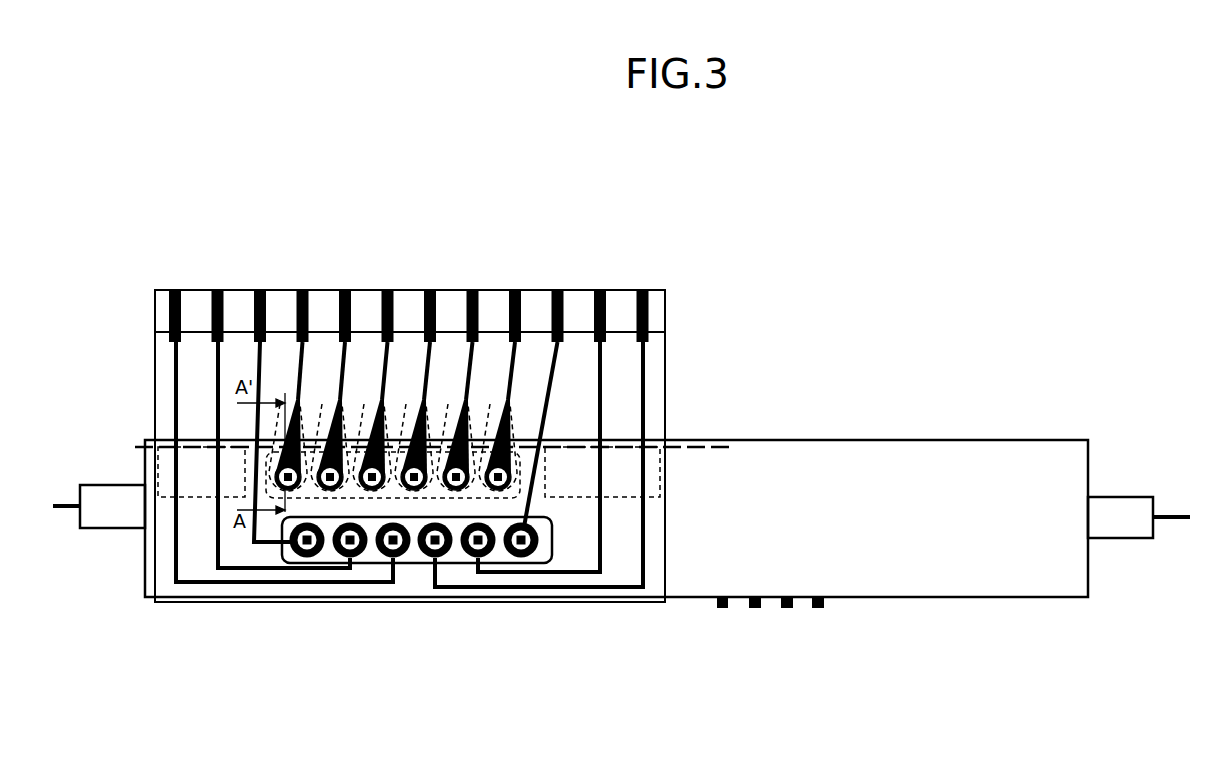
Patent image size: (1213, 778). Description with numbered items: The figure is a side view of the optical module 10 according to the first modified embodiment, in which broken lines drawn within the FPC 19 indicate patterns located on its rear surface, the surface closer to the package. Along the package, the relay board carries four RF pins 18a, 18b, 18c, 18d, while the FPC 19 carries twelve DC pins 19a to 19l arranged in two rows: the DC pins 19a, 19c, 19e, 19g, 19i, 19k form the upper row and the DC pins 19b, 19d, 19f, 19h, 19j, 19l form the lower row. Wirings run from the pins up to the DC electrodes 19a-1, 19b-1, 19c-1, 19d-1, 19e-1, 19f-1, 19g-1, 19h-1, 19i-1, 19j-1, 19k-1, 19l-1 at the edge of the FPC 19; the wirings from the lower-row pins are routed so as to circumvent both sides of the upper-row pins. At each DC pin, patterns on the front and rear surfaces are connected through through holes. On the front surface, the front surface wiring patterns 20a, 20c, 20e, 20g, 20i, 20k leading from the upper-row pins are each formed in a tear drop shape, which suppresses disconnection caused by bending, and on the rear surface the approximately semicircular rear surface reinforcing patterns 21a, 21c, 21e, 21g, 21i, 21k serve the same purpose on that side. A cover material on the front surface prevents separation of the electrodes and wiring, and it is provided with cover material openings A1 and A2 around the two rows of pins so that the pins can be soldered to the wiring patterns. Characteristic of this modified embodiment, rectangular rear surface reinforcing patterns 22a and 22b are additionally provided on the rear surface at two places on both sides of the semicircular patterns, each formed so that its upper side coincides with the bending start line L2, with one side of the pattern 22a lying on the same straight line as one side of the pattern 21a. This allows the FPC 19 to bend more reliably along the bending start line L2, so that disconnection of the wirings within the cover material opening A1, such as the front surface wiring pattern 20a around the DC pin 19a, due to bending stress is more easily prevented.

The optical module 10 is at (1032, 597).
The RF pin 18a is at (723, 608).
The RF pin 18b is at (757, 608).
The RF pin 18c is at (788, 608).
The RF pin 18d is at (820, 608).
The FPC 19 is at (665, 305).
The DC pin 19a is at (290, 495).
The DC pin 19b is at (307, 560).
The DC pin 19c is at (329, 497).
The DC pin 19d is at (350, 560).
The DC pin 19e is at (372, 497).
The DC pin 19f is at (393, 560).
The DC pin 19g is at (414, 497).
The DC pin 19h is at (436, 560).
The DC pin 19i is at (457, 497).
The DC pin 19j is at (478, 560).
The DC pin 19k is at (500, 497).
The DC pin 19l is at (521, 560).
The DC electrode 19a-1 is at (317, 297).
The DC electrode 19b-1 is at (274, 297).
The DC electrode 19c-1 is at (359, 297).
The DC electrode 19d-1 is at (232, 297).
The DC electrode 19e-1 is at (402, 297).
The DC electrode 19f-1 is at (189, 297).
The DC electrode 19g-1 is at (445, 297).
The DC electrode 19h-1 is at (657, 297).
The DC electrode 19i-1 is at (487, 297).
The DC electrode 19j-1 is at (615, 297).
The DC electrode 19k-1 is at (530, 297).
The DC electrode 19l-1 is at (571, 297).
The front surface wiring pattern 20a is at (272, 462).
The front surface wiring pattern 20c is at (343, 413).
The front surface wiring pattern 20e is at (385, 413).
The front surface wiring pattern 20g is at (430, 416).
The front surface wiring pattern 20i is at (473, 416).
The front surface wiring pattern 20k is at (513, 423).
The rear surface reinforcing pattern 21a is at (262, 458).
The rear surface reinforcing pattern 21c is at (316, 420).
The rear surface reinforcing pattern 21e is at (359, 422).
The rear surface reinforcing pattern 21g is at (401, 422).
The rear surface reinforcing pattern 21i is at (444, 422).
The rear surface reinforcing pattern 21k is at (547, 463).
The rear surface reinforcing pattern 22a is at (203, 497).
The rear surface reinforcing pattern 22b is at (662, 468).
The bending start line L2 is at (728, 447).
The cover material opening A1 is at (523, 492).
The cover material opening A2 is at (553, 540).